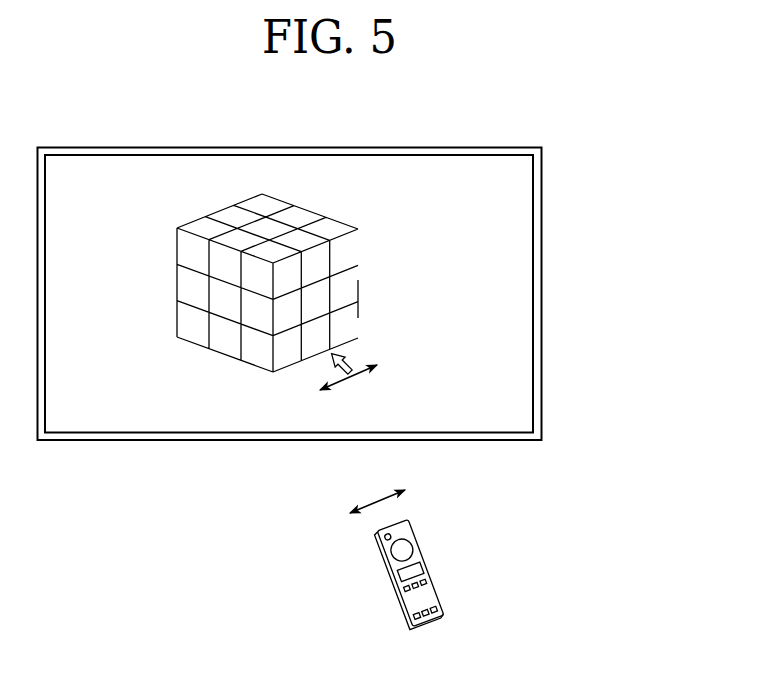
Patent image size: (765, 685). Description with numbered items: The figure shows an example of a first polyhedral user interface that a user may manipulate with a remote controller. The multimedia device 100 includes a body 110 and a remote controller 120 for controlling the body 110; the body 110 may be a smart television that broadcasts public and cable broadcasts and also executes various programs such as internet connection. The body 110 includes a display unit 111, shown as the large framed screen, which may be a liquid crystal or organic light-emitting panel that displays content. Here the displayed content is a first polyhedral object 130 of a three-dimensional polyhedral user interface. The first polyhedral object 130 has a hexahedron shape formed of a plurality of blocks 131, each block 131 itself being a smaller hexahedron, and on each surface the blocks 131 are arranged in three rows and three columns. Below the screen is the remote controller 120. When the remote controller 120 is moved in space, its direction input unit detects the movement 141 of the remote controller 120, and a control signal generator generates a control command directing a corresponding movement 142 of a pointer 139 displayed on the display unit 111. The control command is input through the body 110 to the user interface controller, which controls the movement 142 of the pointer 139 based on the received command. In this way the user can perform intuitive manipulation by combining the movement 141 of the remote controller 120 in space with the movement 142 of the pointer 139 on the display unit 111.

The multimedia device 100 is at (600, 120).
The body 110 is at (550, 323).
The display unit 111 is at (533, 215).
The remote controller 120 is at (435, 573).
The first polyhedral object 130 is at (378, 240).
The blocks 131 is at (358, 280).
The pointer 139 is at (350, 358).
The movement of the remote controller 141 is at (373, 505).
The movement of the pointer 142 is at (352, 377).